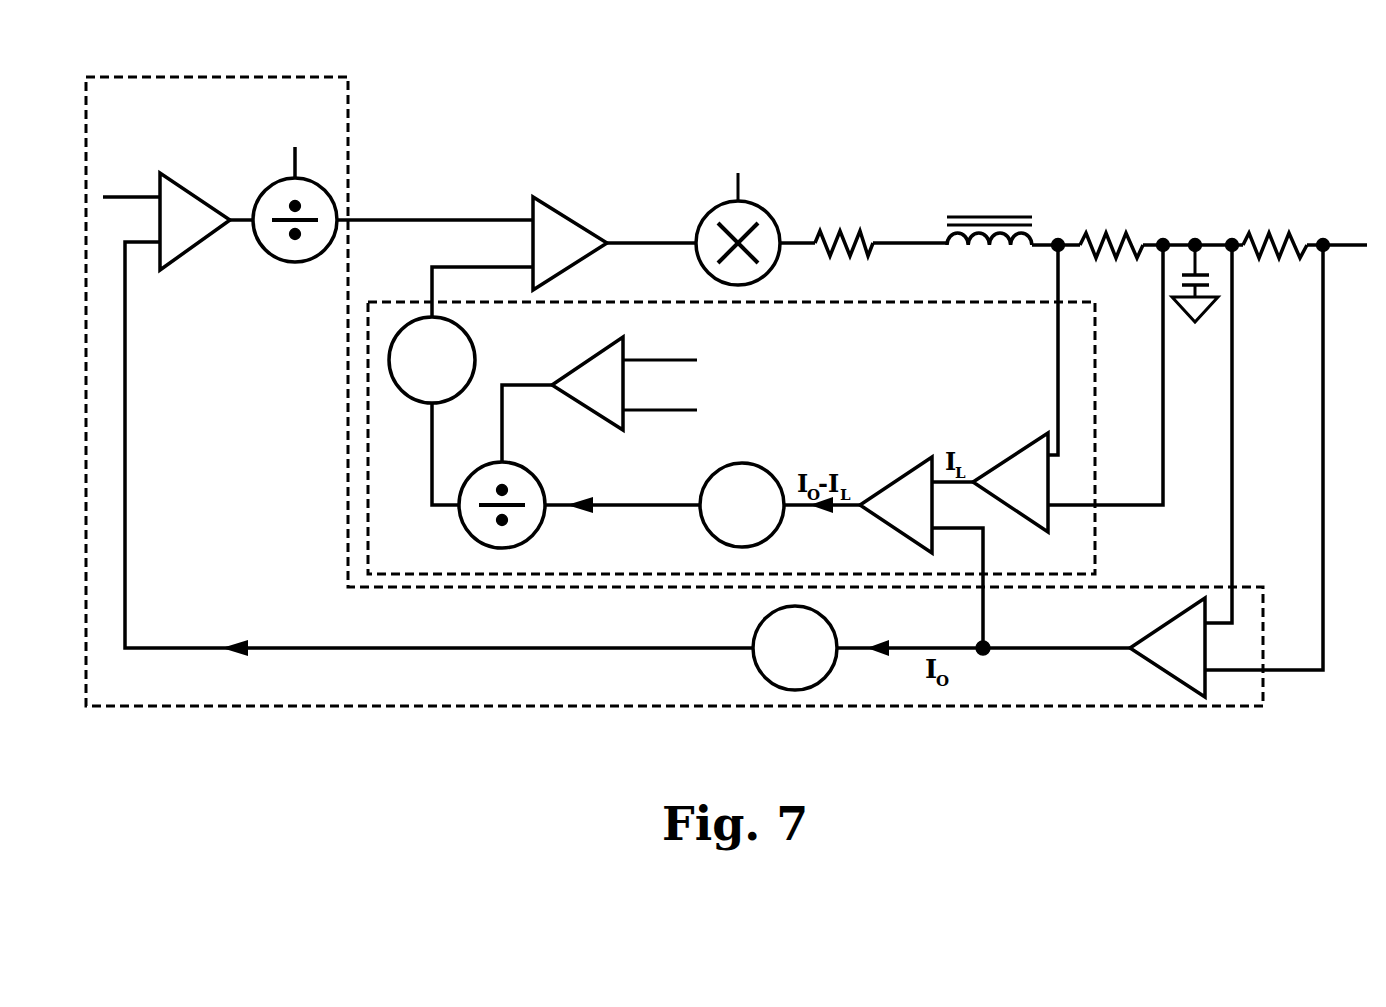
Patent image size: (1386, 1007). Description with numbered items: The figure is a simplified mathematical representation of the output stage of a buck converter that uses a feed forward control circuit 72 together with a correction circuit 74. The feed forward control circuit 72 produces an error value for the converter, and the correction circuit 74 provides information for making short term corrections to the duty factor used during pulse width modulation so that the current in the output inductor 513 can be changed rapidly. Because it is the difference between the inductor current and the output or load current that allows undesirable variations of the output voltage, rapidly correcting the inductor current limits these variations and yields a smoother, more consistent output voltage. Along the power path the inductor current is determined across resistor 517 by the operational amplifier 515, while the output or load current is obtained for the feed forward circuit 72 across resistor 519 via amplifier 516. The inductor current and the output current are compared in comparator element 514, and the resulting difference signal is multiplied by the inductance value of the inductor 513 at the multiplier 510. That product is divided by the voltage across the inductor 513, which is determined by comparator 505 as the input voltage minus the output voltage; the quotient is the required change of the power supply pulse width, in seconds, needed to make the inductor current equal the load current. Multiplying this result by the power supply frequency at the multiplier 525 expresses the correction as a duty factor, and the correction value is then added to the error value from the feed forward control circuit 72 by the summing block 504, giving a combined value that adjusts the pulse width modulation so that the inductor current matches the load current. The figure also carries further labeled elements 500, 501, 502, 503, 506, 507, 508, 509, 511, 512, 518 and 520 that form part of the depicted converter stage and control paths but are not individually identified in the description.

The feed forward control circuit 72 is at (205, 70).
The correction circuit 74 is at (402, 287).
The reference voltage input 500 is at (128, 175).
The error amplifier 501 is at (195, 213).
The input voltage input 502 is at (304, 134).
The divider 503 is at (290, 209).
The summing block 504 is at (576, 243).
The comparator 505 is at (617, 379).
The divider 506 is at (471, 505).
The feedback signal path 507 is at (439, 467).
The multiplier 508 is at (717, 213).
The correction signal path 509 is at (622, 497).
The multiplier 510 is at (724, 511).
The equivalent resistance block 511 is at (773, 648).
The loss resistor 512 is at (841, 239).
The output inductor 513 is at (989, 243).
The comparator element 514 is at (896, 503).
The operational amplifier 515 is at (1010, 478).
The amplifier 516 is at (1156, 647).
The resistor 517 is at (1110, 230).
The output capacitor 518 is at (1164, 283).
The resistor 519 is at (1275, 230).
The output voltage node 520 is at (1350, 226).
The multiplier 525 is at (443, 356).